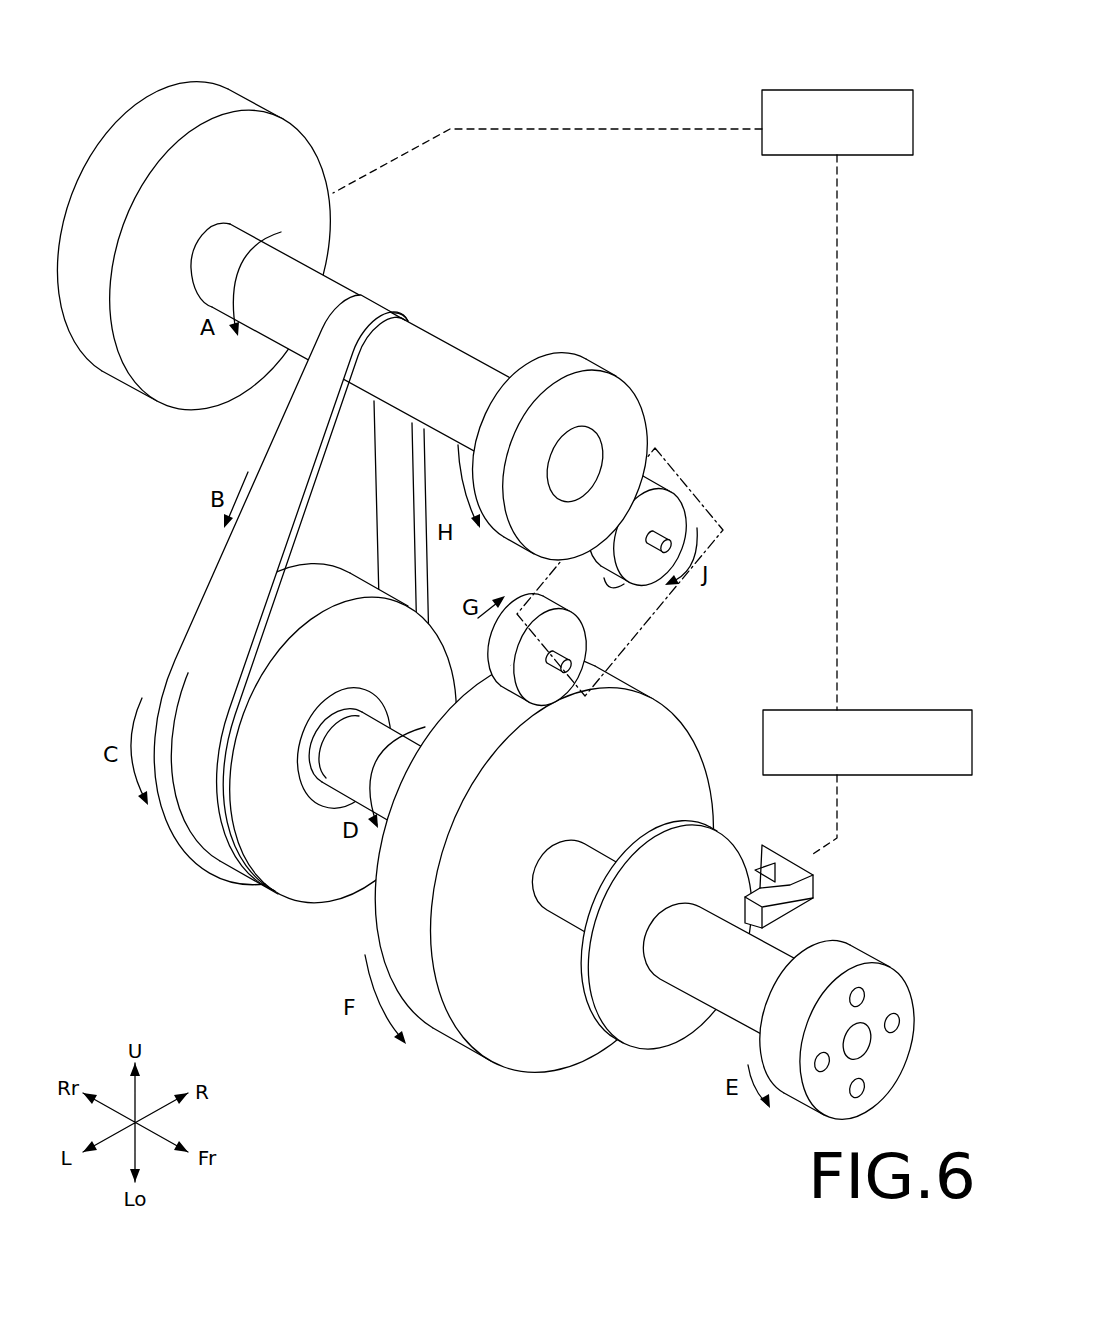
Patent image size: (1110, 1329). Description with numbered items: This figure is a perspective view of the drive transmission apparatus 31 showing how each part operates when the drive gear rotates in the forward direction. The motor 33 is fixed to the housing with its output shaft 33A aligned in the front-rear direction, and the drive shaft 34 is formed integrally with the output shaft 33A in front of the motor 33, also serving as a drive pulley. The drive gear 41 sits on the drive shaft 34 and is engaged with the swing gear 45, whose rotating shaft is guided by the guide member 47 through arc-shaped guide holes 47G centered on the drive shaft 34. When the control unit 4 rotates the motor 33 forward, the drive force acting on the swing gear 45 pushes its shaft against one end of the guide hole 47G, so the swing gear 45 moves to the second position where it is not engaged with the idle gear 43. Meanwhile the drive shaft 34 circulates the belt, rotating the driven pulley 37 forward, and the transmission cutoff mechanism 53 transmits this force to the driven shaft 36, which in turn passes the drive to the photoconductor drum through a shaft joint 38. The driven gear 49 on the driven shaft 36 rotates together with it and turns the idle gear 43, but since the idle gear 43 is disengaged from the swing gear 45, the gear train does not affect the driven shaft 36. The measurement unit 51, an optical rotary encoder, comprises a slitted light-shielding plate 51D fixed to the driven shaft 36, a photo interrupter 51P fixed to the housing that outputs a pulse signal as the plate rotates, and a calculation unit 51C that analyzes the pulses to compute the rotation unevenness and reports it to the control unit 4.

The drive transmission apparatus 31 is at (541, 88).
The control unit 4 is at (852, 92).
The motor 33 is at (303, 136).
The output shaft 33A is at (450, 337).
The drive shaft 34 is at (378, 351).
The drive gear 41 is at (640, 398).
The swing gear 45 is at (690, 503).
The guide member 47 is at (630, 582).
The guide hole 47G is at (683, 586).
The idle gear 43 is at (506, 600).
The driven pulley 37 is at (180, 655).
The transmission cutoff mechanism 53 is at (327, 812).
The driven shaft 36 is at (387, 820).
The driven gear 49 is at (454, 1045).
The shaft joint 38 is at (756, 1050).
The measurement unit 51 is at (765, 890).
The photo interrupter 51P is at (812, 866).
The light-shielding plate 51D is at (738, 842).
The calculation unit 51C is at (850, 712).